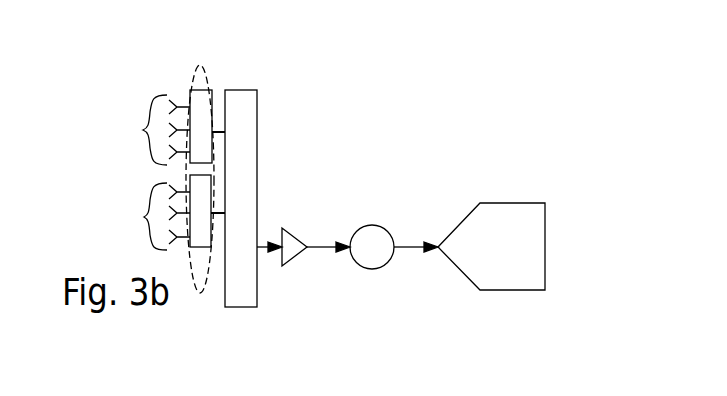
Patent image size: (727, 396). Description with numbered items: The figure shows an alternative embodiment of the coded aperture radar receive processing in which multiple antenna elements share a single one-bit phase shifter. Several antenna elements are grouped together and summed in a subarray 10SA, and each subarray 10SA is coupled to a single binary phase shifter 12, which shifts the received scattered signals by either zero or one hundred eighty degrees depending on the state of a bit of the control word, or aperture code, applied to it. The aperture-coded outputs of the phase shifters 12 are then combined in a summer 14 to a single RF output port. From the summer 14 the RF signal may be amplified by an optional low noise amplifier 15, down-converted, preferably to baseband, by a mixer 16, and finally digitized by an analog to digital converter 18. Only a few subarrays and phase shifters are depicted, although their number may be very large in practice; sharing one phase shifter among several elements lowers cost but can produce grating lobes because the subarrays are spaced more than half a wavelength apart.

The subarray 10SA is at (135, 172).
The phase shifter 12 is at (202, 63).
The summer 14 is at (262, 295).
The amplifier 15 is at (293, 253).
The mixer 16 is at (375, 258).
The analog to digital converter 18 is at (500, 263).